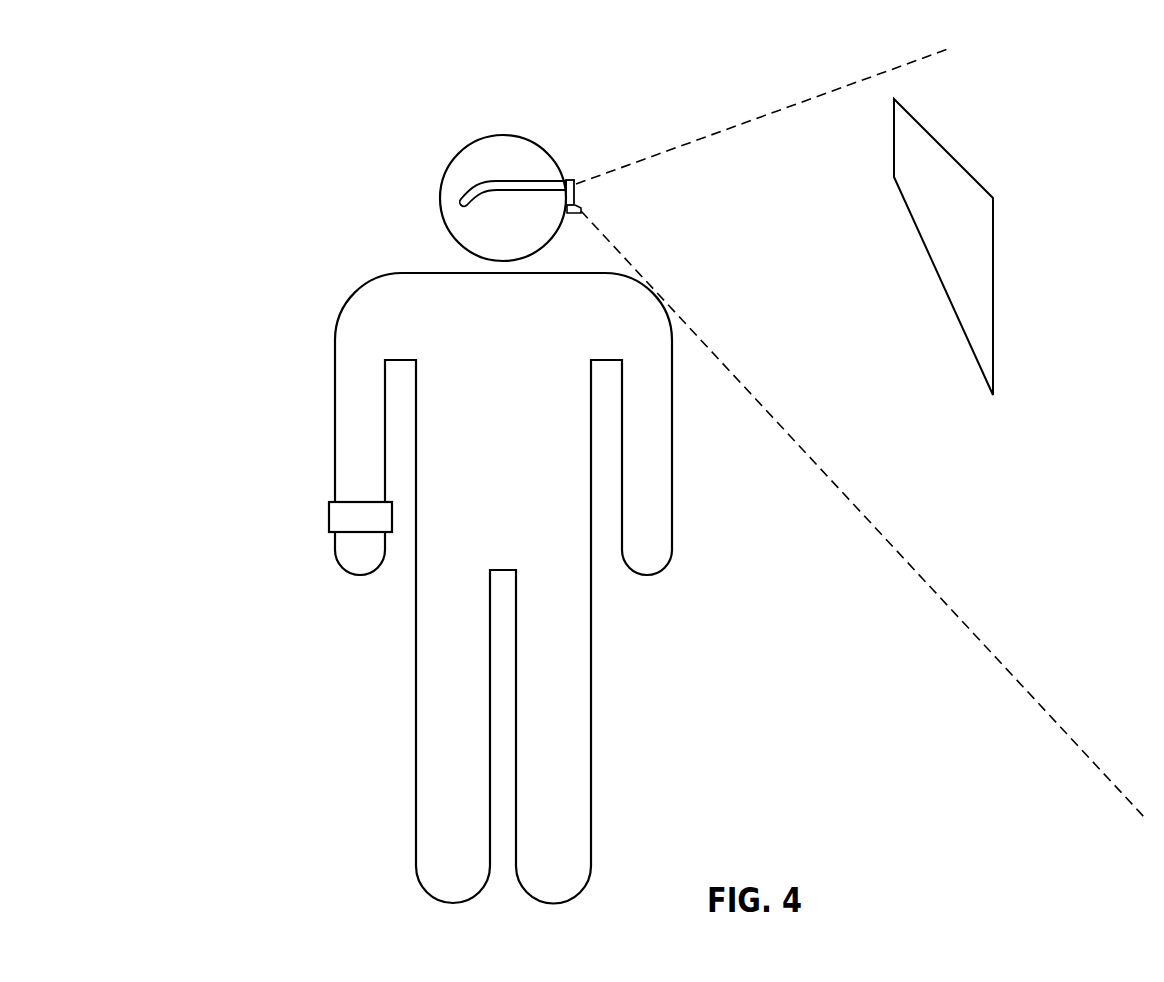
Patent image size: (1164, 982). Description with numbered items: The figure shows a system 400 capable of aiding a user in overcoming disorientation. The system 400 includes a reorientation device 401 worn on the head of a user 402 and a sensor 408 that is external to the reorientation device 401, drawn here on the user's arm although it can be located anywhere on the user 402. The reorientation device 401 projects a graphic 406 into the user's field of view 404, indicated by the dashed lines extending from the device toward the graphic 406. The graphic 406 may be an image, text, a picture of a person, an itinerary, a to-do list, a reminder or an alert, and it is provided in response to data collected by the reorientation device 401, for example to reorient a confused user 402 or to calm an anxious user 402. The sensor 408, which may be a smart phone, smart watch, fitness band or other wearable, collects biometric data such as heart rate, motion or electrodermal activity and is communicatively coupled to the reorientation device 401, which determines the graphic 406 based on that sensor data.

The system 400 is at (290, 50).
The reorientation device 401 is at (518, 175).
The user 402 is at (364, 308).
The field of view 404 is at (797, 252).
The graphic 406 is at (970, 217).
The sensor 408 is at (330, 512).